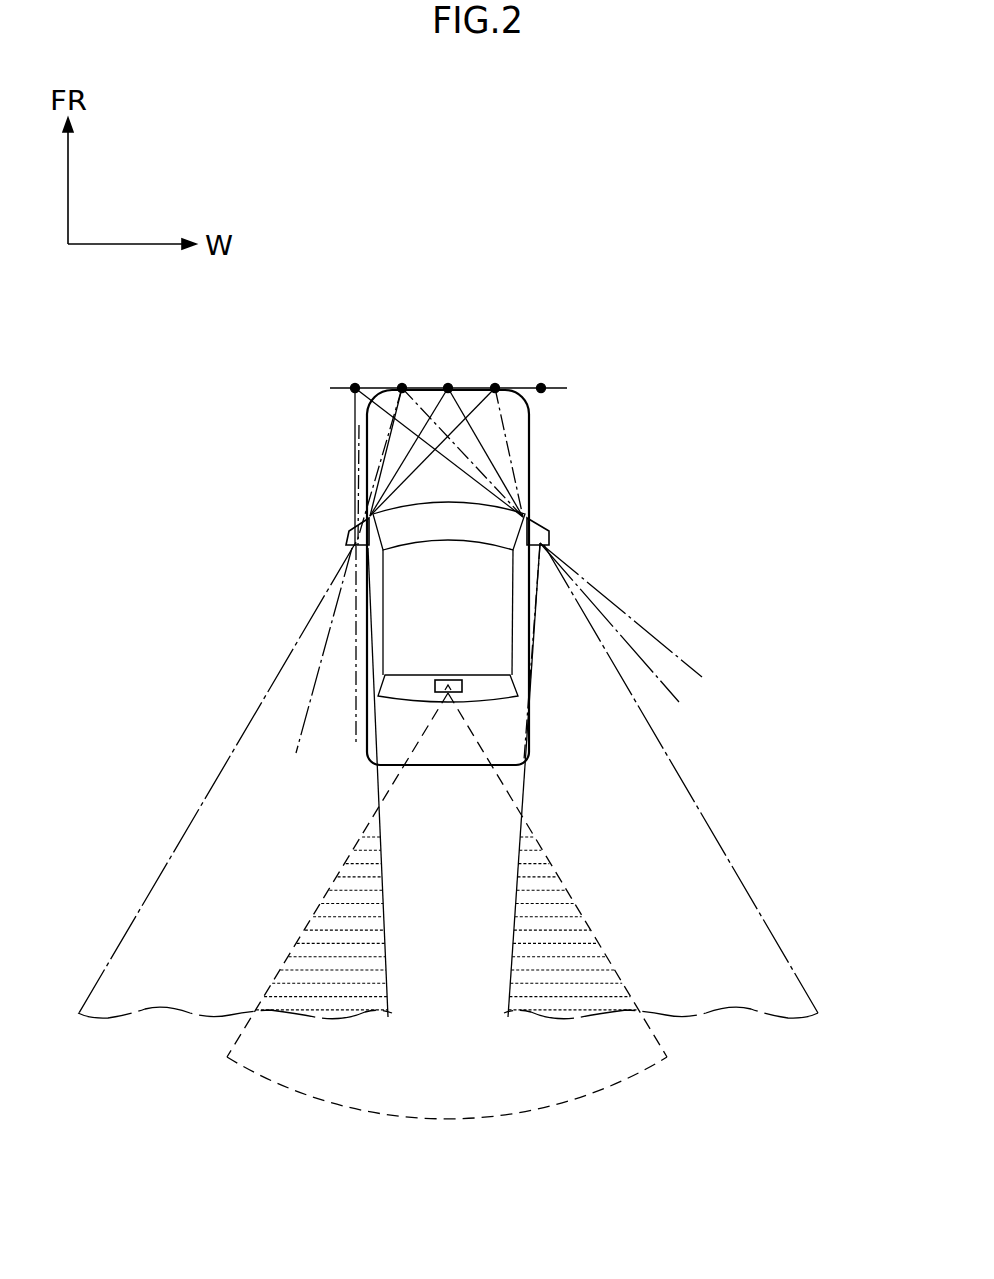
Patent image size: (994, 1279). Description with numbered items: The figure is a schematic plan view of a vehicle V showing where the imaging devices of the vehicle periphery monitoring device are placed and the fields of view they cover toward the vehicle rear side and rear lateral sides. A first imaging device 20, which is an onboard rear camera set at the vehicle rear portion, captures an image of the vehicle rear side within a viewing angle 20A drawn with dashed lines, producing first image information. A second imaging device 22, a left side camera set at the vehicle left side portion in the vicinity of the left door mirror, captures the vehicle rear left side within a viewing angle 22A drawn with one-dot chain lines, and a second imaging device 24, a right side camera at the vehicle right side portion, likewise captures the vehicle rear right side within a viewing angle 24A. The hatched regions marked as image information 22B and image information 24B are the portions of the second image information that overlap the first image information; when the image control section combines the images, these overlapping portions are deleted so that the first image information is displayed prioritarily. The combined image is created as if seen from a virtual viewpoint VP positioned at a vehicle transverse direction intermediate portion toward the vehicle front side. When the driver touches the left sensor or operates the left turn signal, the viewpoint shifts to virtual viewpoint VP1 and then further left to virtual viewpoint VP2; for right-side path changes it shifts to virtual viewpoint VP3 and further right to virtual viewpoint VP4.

The vehicle V is at (358, 476).
The virtual viewpoint VP is at (448, 388).
The virtual viewpoint VP1 is at (402, 388).
The virtual viewpoint VP2 is at (355, 388).
The virtual viewpoint VP3 is at (495, 388).
The virtual viewpoint VP4 is at (541, 388).
The first imaging device 20 is at (448, 680).
The viewing angle 20A is at (657, 1040).
The second imaging device 22 is at (347, 536).
The viewing angle 22A is at (198, 800).
The image information 22B is at (305, 927).
The second imaging device 24 is at (548, 533).
The viewing angle 24A is at (695, 803).
The image information 24B is at (598, 924).